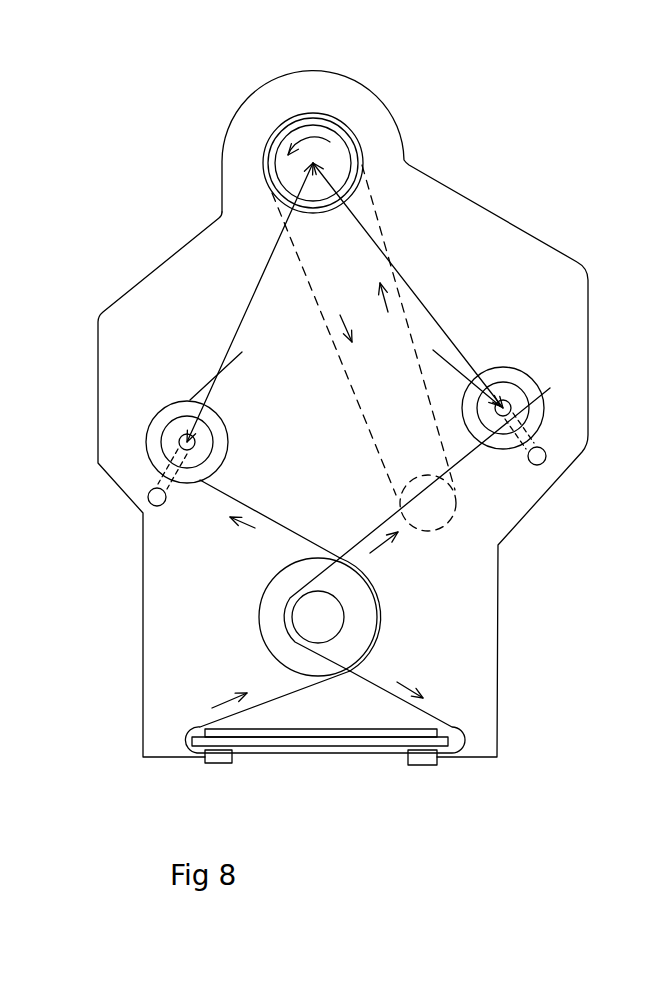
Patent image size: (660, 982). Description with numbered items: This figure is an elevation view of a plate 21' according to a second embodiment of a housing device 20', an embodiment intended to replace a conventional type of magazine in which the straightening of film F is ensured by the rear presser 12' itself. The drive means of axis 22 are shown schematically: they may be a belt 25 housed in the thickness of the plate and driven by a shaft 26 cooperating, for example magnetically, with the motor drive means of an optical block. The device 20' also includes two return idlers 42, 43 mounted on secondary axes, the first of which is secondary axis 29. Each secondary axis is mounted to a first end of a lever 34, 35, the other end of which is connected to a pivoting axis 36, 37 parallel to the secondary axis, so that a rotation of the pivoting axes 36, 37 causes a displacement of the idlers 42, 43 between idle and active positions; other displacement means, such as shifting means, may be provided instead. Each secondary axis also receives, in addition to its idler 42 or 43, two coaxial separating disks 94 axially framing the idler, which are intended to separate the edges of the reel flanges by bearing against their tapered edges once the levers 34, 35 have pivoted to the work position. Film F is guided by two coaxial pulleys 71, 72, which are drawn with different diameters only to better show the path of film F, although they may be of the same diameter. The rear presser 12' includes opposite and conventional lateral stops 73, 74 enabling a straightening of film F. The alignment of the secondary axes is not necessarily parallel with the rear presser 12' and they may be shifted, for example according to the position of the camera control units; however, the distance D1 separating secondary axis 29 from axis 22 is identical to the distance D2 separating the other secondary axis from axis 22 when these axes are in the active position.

The rear presser 12' is at (325, 740).
The housing device 20' is at (362, 414).
The plate 21' is at (343, 414).
The axis 22 is at (333, 147).
The belt 25 is at (350, 380).
The shaft 26 is at (420, 480).
The secondary axis 29 is at (505, 409).
The lever 34 is at (525, 447).
The lever 35 is at (178, 483).
The pivoting axis 36 is at (547, 461).
The pivoting axis 37 is at (150, 502).
The return idler 42 is at (492, 418).
The return idler 43 is at (212, 440).
The pulley 71 is at (270, 609).
The pulley 72 is at (323, 622).
The lateral stop 73 is at (420, 760).
The lateral stop 74 is at (222, 760).
The separating disk 94 is at (147, 432).
The distance D1 is at (408, 285).
The distance D2 is at (250, 302).
The film F is at (455, 352).